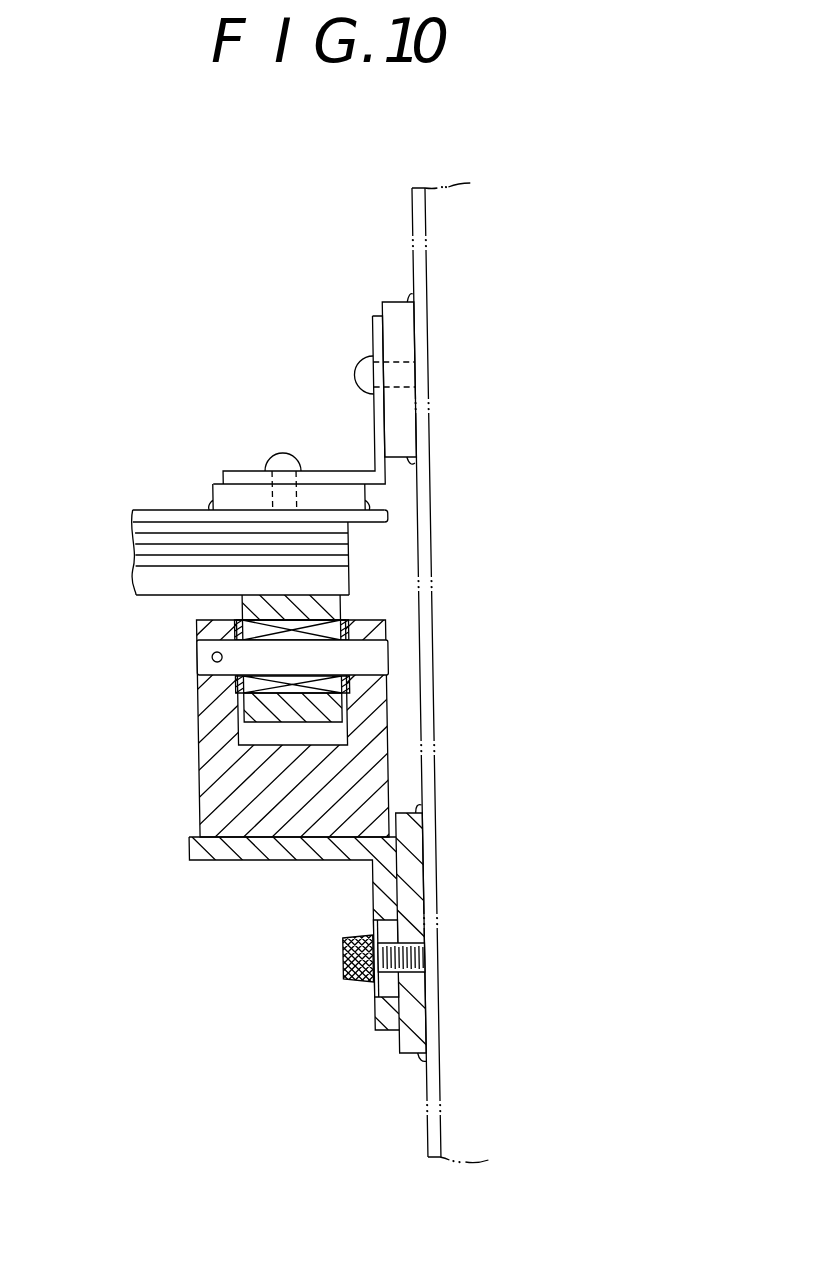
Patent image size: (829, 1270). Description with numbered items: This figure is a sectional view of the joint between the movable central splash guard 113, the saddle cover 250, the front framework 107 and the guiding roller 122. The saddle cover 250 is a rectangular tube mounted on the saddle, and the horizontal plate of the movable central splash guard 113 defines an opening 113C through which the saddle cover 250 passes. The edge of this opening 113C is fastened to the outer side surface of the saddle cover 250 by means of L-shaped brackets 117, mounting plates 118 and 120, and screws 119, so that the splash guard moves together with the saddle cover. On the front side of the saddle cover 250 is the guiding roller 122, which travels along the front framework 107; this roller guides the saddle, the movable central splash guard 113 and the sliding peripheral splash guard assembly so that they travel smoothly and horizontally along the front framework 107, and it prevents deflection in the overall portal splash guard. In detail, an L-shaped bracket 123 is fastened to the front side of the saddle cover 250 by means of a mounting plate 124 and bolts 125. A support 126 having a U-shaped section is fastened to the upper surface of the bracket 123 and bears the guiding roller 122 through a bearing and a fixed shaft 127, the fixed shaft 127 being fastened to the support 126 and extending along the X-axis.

The saddle cover 250 is at (417, 216).
The mounting plate 118 is at (403, 317).
The L-shaped bracket 117 is at (243, 470).
The screw 119 is at (365, 375).
The mounting plate 120 is at (215, 493).
The movable central splash guard 113 is at (135, 517).
The opening 113C is at (394, 516).
The front framework 107 is at (151, 575).
The guiding roller 122 is at (344, 598).
The fixed shaft 127 is at (205, 662).
The support 126 is at (215, 805).
The L-shaped bracket 123 is at (219, 852).
The bolt 125 is at (338, 952).
The mounting plate 124 is at (399, 1040).